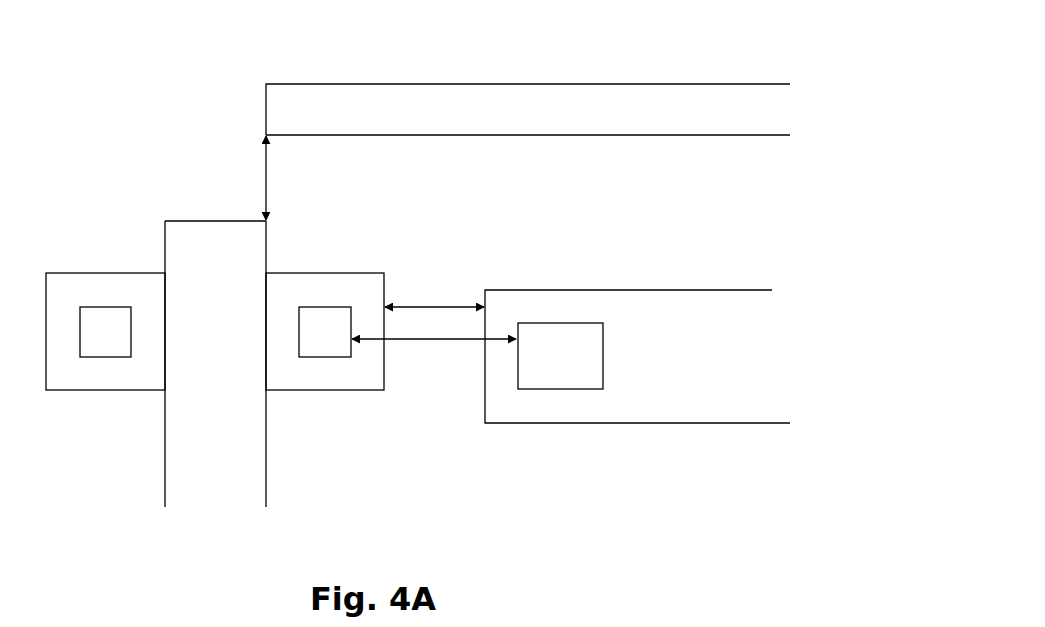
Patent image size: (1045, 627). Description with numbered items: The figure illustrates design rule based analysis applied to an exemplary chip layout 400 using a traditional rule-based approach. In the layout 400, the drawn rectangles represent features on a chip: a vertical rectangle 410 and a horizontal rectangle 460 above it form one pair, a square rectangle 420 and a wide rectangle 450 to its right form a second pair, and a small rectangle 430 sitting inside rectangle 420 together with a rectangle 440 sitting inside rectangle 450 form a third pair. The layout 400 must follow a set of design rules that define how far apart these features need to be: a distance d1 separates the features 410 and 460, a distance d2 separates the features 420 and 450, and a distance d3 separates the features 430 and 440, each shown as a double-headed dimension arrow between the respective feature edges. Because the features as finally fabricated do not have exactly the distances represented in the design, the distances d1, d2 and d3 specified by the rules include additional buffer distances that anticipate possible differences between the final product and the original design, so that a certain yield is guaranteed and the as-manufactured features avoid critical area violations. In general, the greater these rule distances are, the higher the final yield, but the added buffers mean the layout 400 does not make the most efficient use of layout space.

The layout 400 is at (418, 311).
The rectangle 410 is at (198, 473).
The rectangle 420 is at (317, 390).
The rectangle 430 is at (332, 306).
The rectangle 440 is at (568, 390).
The rectangle 450 is at (720, 423).
The rectangle 460 is at (637, 120).
The distance d1 is at (266, 187).
The distance d2 is at (435, 305).
The distance d3 is at (400, 342).